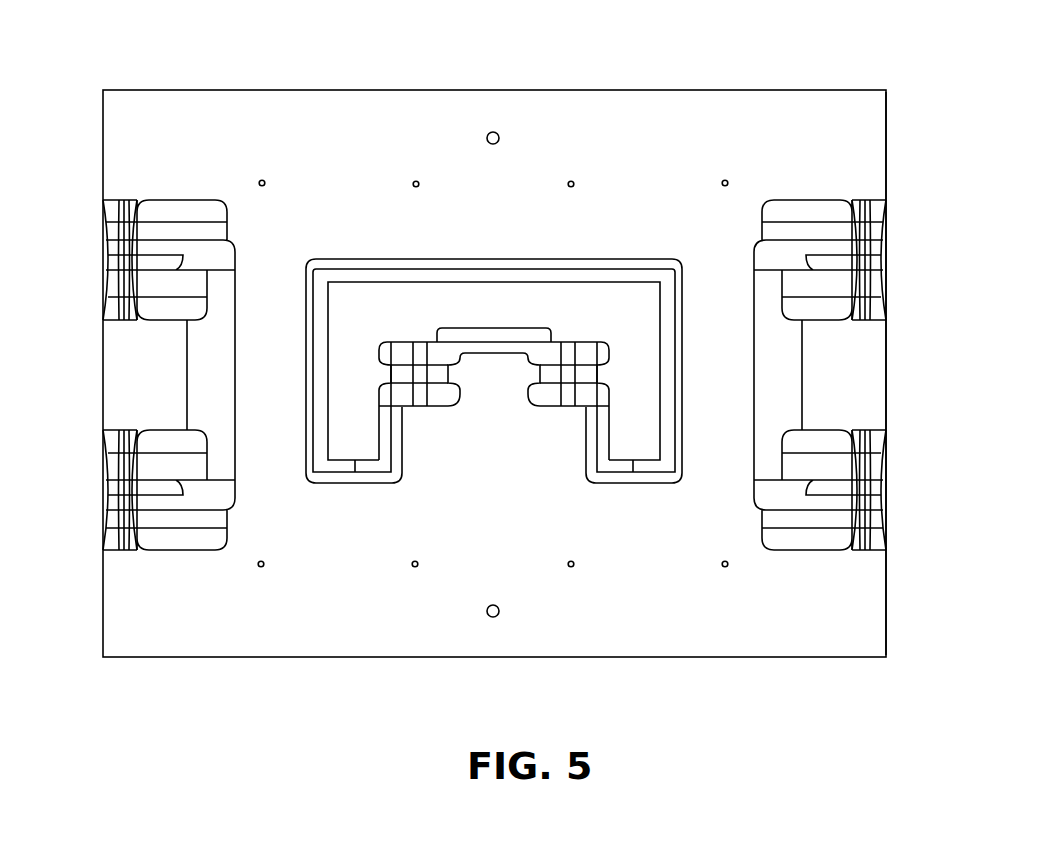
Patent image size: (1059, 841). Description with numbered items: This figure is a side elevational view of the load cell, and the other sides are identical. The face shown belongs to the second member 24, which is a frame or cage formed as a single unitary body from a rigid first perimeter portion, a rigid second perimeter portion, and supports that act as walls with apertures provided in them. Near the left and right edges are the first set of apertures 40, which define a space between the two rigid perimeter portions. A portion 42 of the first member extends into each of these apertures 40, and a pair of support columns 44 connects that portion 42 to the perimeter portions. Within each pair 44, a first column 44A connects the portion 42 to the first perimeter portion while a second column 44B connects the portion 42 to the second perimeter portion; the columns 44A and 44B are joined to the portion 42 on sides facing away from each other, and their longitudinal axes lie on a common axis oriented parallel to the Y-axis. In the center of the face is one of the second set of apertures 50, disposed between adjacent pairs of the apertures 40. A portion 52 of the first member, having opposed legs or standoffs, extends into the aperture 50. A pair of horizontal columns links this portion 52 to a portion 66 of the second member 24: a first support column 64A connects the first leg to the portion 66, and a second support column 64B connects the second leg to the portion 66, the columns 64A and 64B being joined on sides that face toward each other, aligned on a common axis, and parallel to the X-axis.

The second member 24 is at (660, 658).
The first set of apertures 40 is at (811, 203).
The portion of the first member 42 is at (887, 367).
The pair of support columns 44 is at (495, 331).
The first column 44A is at (103, 284).
The second column 44B is at (103, 465).
The second set of apertures 50 is at (650, 263).
The portion of the first member 52 is at (583, 282).
The first support column 64A is at (548, 362).
The second support column 64B is at (420, 363).
The portion of the second member 66 is at (493, 360).